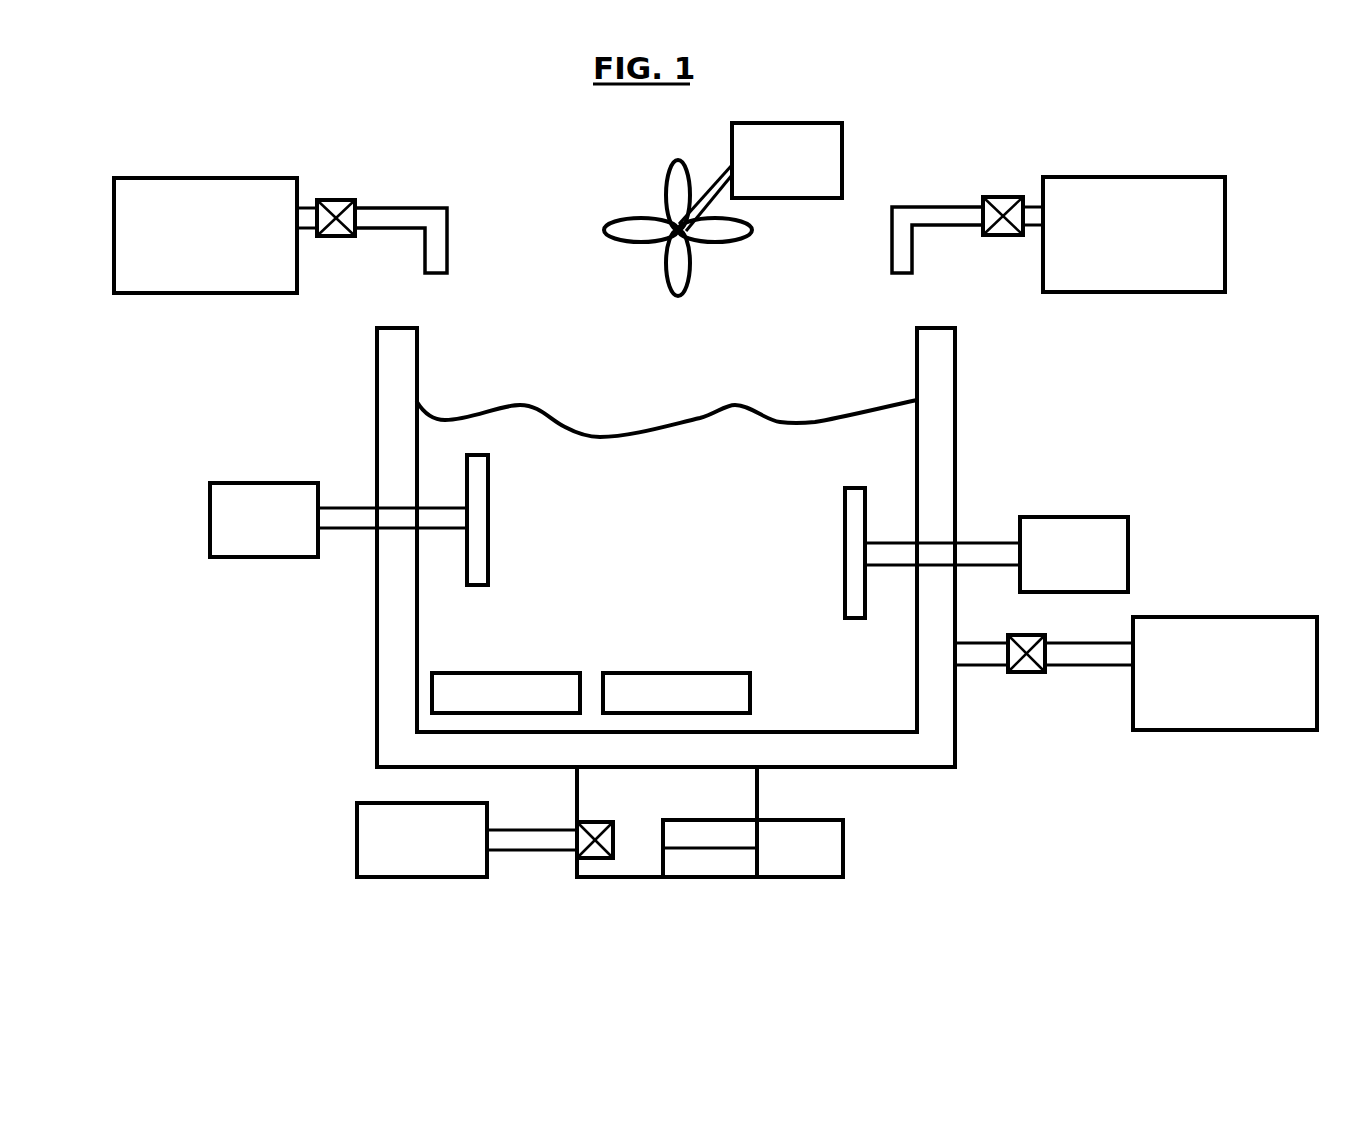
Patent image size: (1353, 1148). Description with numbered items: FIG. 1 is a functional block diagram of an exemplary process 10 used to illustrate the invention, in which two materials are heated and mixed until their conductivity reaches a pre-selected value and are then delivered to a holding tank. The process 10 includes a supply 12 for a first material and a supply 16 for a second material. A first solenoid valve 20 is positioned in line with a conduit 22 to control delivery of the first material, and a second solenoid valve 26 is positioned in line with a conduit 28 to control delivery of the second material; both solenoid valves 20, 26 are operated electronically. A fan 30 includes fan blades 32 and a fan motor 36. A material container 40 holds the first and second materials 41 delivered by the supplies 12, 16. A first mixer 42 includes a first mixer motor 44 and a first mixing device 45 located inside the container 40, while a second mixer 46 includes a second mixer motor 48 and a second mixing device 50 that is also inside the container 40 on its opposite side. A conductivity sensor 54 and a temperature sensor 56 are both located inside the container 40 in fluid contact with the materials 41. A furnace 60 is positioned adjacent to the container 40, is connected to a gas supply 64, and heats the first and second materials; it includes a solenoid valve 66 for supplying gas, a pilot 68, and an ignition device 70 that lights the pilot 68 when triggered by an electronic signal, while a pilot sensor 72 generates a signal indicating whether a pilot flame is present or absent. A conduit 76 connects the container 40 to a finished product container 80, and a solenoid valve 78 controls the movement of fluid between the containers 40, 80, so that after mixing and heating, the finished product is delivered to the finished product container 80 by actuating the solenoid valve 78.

The process 10 is at (715, 506).
The supply for a first material 12 is at (212, 178).
The supply for a second material 16 is at (1088, 175).
The first solenoid valve 20 is at (337, 200).
The conduit 22 is at (412, 208).
The second solenoid valve 26 is at (1002, 197).
The conduit 28 is at (950, 205).
The fan 30 is at (720, 208).
The fan blades 32 is at (690, 283).
The fan motor 36 is at (842, 138).
The material container 40 is at (700, 547).
The first and second materials 41 is at (643, 506).
The first mixer 42 is at (377, 518).
The first mixer motor 44 is at (258, 557).
The first mixing device 45 is at (488, 537).
The second mixer 46 is at (970, 512).
The second mixer motor 48 is at (1068, 517).
The second mixing device 50 is at (845, 488).
The conductivity sensor 54 is at (672, 673).
The temperature sensor 56 is at (503, 673).
The furnace 60 is at (749, 841).
The gas supply 64 is at (437, 877).
The solenoid valve 66 is at (597, 858).
The pilot 68 is at (740, 830).
The ignition device 70 is at (700, 877).
The pilot sensor 72 is at (843, 847).
The conduit 76 is at (1063, 665).
The solenoid valve 78 is at (1020, 675).
The finished product container 80 is at (1200, 730).